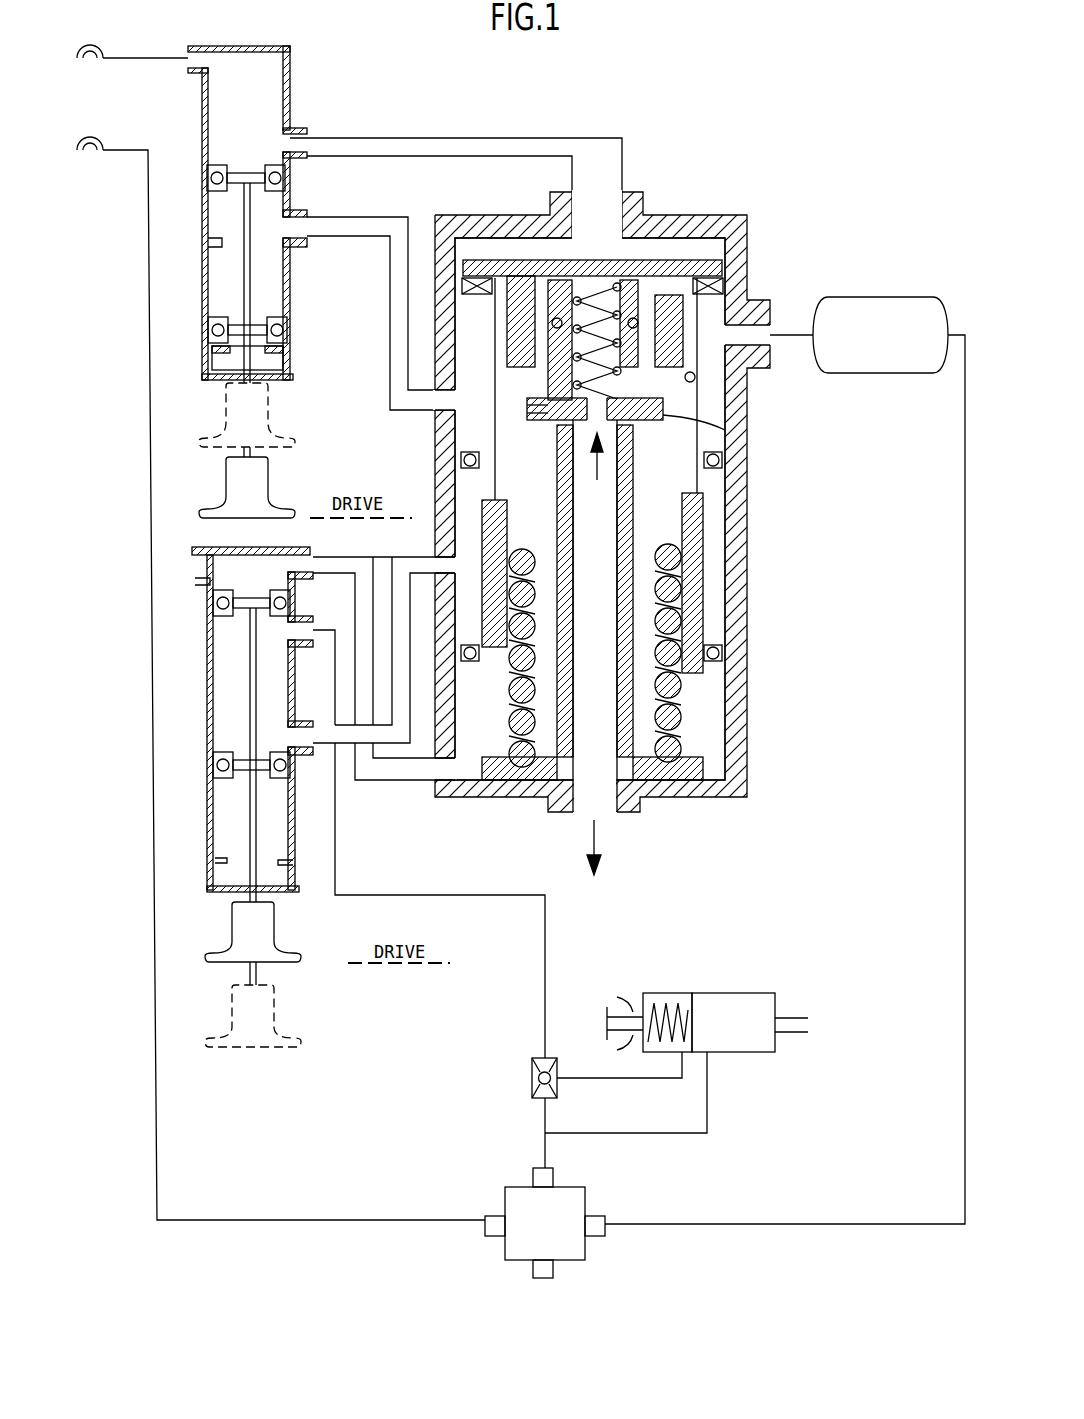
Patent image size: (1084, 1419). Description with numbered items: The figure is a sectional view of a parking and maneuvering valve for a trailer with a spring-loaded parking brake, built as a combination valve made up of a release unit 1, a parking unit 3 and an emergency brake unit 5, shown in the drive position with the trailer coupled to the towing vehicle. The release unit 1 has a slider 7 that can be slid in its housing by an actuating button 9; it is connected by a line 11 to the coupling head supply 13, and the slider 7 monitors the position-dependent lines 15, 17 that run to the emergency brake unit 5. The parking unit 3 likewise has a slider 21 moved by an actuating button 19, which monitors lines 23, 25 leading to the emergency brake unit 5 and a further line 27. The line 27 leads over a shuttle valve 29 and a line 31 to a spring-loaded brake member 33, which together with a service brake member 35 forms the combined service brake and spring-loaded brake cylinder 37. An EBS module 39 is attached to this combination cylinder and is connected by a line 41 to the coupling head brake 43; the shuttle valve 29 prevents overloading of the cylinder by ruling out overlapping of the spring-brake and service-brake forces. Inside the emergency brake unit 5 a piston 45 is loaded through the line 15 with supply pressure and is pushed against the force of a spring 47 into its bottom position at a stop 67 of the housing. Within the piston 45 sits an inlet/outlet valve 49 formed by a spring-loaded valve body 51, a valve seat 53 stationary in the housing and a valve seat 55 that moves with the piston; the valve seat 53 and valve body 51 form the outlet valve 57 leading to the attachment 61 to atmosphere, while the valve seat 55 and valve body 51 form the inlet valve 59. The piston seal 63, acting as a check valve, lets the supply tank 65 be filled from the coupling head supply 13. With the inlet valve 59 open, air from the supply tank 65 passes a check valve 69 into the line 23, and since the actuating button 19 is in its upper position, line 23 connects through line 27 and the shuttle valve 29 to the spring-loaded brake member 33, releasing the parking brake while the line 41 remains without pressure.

The release unit 1 is at (312, 66).
The parking unit 3 is at (311, 888).
The emergency brake unit 5 is at (762, 201).
The slider 7 is at (240, 206).
The actuating button 9 is at (275, 495).
The line 11 is at (152, 58).
The coupling head supply 13 is at (93, 42).
The line 15 is at (437, 138).
The line 17 is at (388, 258).
The actuating button 19 is at (222, 957).
The slider 21 is at (248, 658).
The line 23 is at (325, 740).
The line 25 is at (343, 557).
The line 27 is at (340, 640).
The shuttle valve 29 is at (528, 1080).
The line 31 is at (607, 1078).
The spring-loaded brake member 33 is at (670, 997).
The service brake member 35 is at (760, 1007).
The combined service brake and spring-loaded brake cylinder 37 is at (676, 1039).
The EBS module 39 is at (517, 1203).
The line 41 is at (149, 333).
The coupling head brake 43 is at (95, 132).
The piston 45 is at (632, 270).
The spring 47 is at (682, 723).
The inlet/outlet valve 49 is at (680, 560).
The valve body 51 is at (622, 393).
The valve seat 53 is at (660, 426).
The valve seat 55 is at (560, 440).
The outlet valve 57 is at (535, 411).
The inlet valve 59 is at (665, 438).
The attachment 61 is at (582, 808).
The piston seal 63 is at (750, 285).
The supply tank 65 is at (880, 310).
The stop 67 is at (700, 697).
The check valve 69 is at (696, 378).